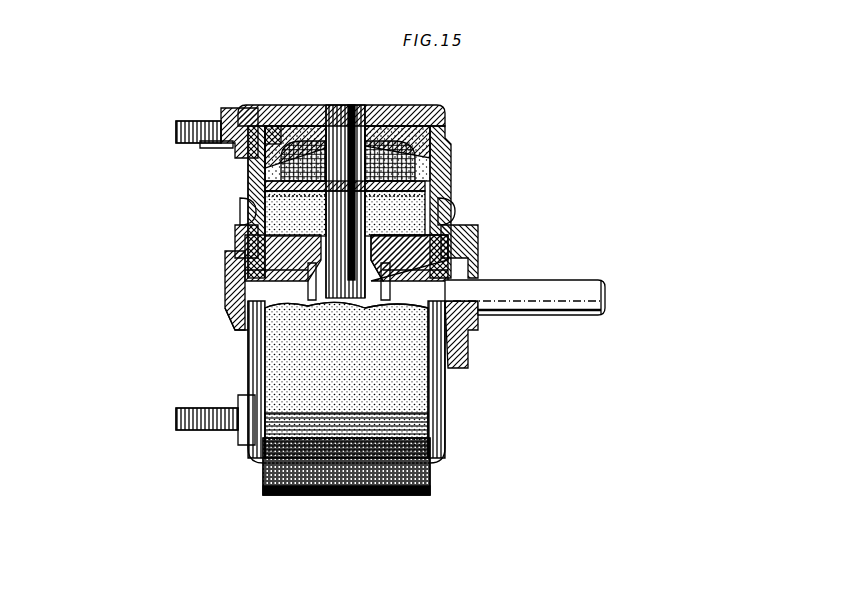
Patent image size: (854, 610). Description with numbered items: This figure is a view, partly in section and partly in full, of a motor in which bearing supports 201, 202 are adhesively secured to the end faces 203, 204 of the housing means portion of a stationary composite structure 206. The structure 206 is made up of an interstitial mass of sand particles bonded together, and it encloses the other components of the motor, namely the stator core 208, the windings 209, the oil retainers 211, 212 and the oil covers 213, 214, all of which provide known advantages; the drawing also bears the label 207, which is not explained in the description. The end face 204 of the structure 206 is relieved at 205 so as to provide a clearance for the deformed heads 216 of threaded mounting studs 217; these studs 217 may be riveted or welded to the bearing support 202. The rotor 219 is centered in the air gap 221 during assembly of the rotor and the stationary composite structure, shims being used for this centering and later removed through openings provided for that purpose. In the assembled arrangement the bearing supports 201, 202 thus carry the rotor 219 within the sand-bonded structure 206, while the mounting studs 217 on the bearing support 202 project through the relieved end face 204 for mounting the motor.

The bearing support 201 is at (437, 103).
The bearing support 202 is at (240, 175).
The end face 203 is at (422, 473).
The end face 204 is at (255, 473).
The relief 205 is at (285, 103).
The stationary composite structure 206 is at (347, 487).
The potting compound 207 is at (387, 100).
The stator core 208 is at (323, 103).
The windings 209 is at (443, 157).
The oil retainer 211 is at (443, 201).
The oil retainer 212 is at (230, 235).
The oil cover 213 is at (467, 322).
The oil cover 214 is at (217, 312).
The deformed head 216 is at (270, 104).
The threaded mounting stud 217 is at (168, 123).
The rotor 219 is at (457, 235).
The air gap 221 is at (346, 100).